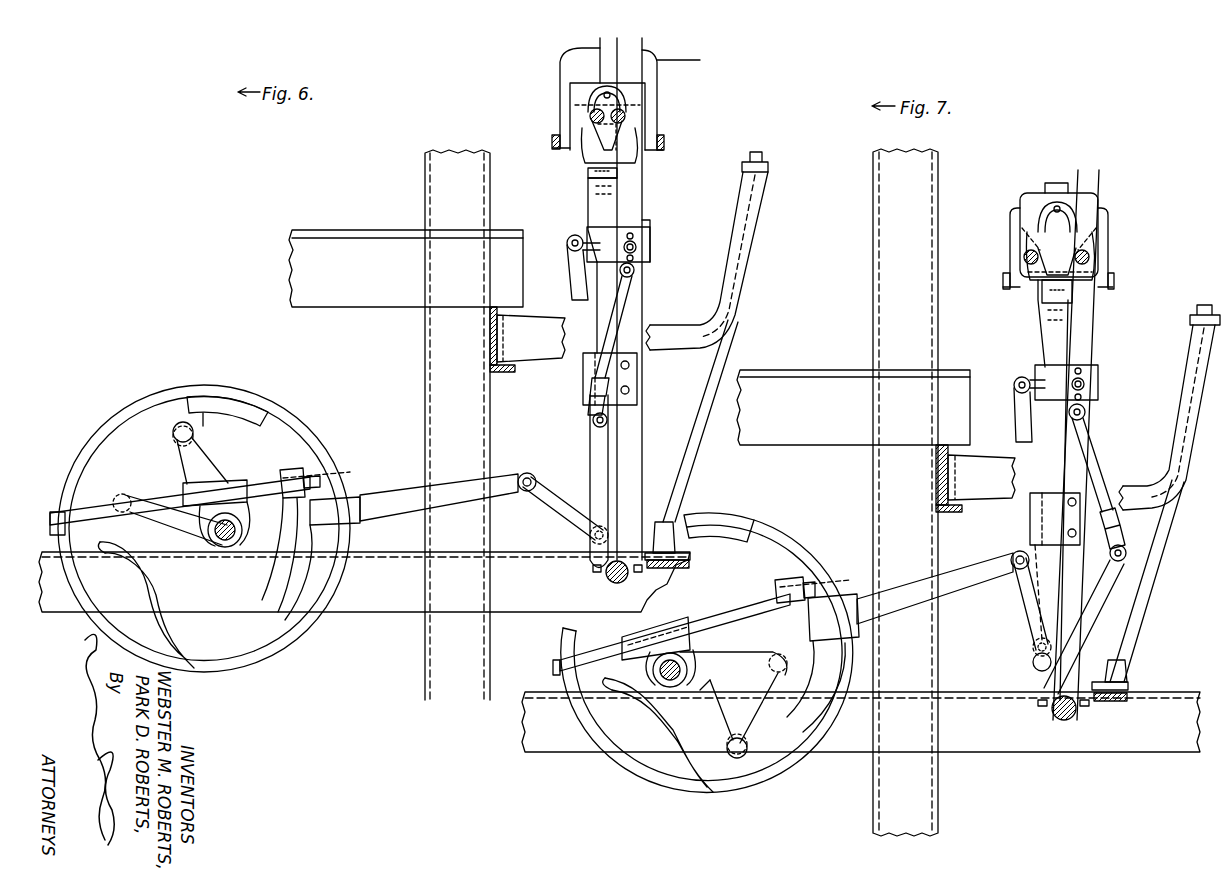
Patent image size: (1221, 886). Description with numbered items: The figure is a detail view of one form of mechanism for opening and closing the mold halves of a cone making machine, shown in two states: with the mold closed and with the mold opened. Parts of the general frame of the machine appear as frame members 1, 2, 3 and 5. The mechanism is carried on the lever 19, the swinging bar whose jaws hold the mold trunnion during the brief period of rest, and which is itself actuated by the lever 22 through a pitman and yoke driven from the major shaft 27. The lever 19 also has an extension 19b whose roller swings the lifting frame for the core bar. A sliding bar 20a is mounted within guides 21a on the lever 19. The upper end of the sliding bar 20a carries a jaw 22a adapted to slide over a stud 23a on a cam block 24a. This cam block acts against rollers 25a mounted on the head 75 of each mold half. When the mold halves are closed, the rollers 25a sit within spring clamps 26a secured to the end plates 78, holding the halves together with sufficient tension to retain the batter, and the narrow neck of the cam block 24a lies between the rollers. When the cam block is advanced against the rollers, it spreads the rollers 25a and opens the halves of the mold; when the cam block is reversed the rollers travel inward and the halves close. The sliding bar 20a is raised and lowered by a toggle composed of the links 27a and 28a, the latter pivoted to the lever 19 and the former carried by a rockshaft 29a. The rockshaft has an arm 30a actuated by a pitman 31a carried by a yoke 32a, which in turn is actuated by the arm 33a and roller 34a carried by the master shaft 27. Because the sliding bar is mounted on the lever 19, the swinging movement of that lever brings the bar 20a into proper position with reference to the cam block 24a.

In FIG. 6, the general frame part 1 is at (370, 608).
In FIG. 7, the general frame part 1 is at (838, 748).
In FIG. 6, the general frame part 2 is at (425, 347).
In FIG. 7, the general frame part 2 is at (873, 516).
In FIG. 6, the general frame part 3 is at (500, 372).
In FIG. 7, the general frame part 3 is at (949, 478).
In FIG. 6, the general frame part 5 is at (341, 212).
In FIG. 7, the general frame part 5 is at (827, 440).
In FIG. 6, the lever 19 is at (643, 198).
In FIG. 7, the lever 19 is at (1080, 338).
In FIG. 6, the extension 19b is at (700, 60).
In FIG. 7, the extension 19b is at (1099, 185).
In FIG. 6, the sliding bar 20a is at (595, 320).
In FIG. 7, the sliding bar 20a is at (1050, 339).
In FIG. 6, the guides 21a is at (583, 383).
In FIG. 7, the guides 21a is at (1035, 368).
In FIG. 6, the lever 22 is at (572, 280).
In FIG. 7, the lever 22 is at (1016, 409).
In FIG. 6, the jaw 22a is at (588, 190).
In FIG. 7, the jaw 22a is at (1038, 303).
In FIG. 6, the stud 23a is at (620, 178).
In FIG. 7, the stud 23a is at (1074, 300).
In FIG. 6, the cam block 24a is at (590, 160).
In FIG. 7, the cam block 24a is at (1090, 285).
In FIG. 6, the rollers 25a is at (590, 116).
In FIG. 7, the rollers 25a is at (1024, 257).
In FIG. 6, the spring clamps 26a is at (628, 100).
In FIG. 7, the spring clamps 26a is at (1040, 215).
In FIG. 6, the major shaft 27 is at (224, 547).
In FIG. 6, the toggle link 27a is at (590, 454).
In FIG. 7, the toggle link 27a is at (1090, 605).
In FIG. 6, the toggle link 28a is at (618, 300).
In FIG. 7, the toggle link 28a is at (1105, 475).
In FIG. 6, the rockshaft 29a is at (590, 563).
In FIG. 7, the rockshaft 29a is at (1033, 662).
In FIG. 6, the arm 30a is at (560, 515).
In FIG. 7, the arm 30a is at (1023, 604).
In FIG. 6, the pitman 31a is at (392, 497).
In FIG. 7, the pitman 31a is at (898, 588).
In FIG. 6, the yoke 32a is at (296, 443).
In FIG. 7, the yoke 32a is at (778, 547).
In FIG. 6, the arm 33a is at (170, 478).
In FIG. 7, the arm 33a is at (773, 658).
In FIG. 6, the roller 34a is at (174, 434).
In FIG. 7, the roller 34a is at (746, 740).
In FIG. 6, the head 75 is at (570, 100).
In FIG. 7, the head 75 is at (1098, 200).
In FIG. 6, the end plate 78 is at (560, 78).
In FIG. 7, the end plate 78 is at (1108, 220).